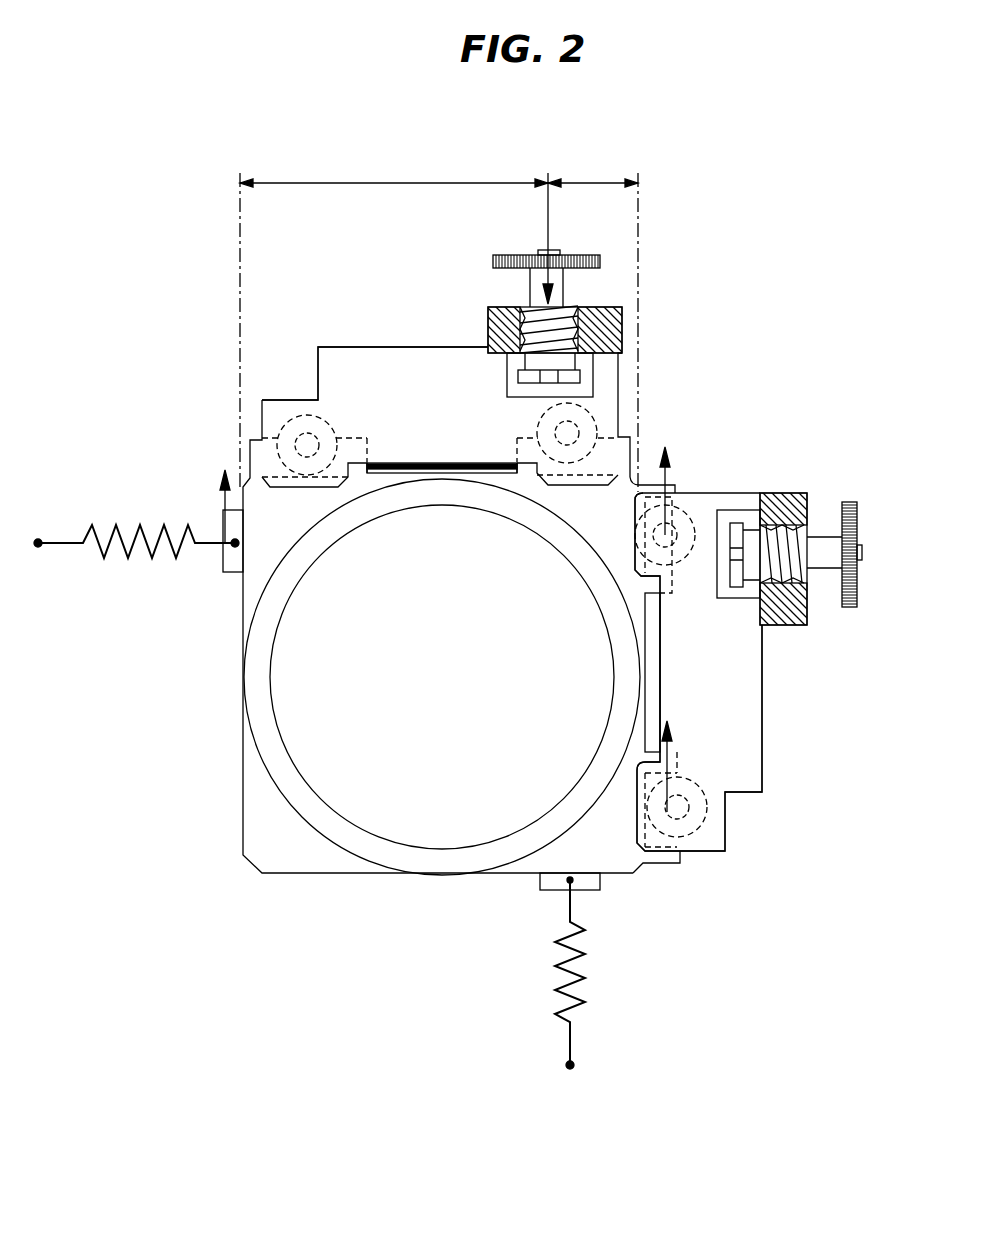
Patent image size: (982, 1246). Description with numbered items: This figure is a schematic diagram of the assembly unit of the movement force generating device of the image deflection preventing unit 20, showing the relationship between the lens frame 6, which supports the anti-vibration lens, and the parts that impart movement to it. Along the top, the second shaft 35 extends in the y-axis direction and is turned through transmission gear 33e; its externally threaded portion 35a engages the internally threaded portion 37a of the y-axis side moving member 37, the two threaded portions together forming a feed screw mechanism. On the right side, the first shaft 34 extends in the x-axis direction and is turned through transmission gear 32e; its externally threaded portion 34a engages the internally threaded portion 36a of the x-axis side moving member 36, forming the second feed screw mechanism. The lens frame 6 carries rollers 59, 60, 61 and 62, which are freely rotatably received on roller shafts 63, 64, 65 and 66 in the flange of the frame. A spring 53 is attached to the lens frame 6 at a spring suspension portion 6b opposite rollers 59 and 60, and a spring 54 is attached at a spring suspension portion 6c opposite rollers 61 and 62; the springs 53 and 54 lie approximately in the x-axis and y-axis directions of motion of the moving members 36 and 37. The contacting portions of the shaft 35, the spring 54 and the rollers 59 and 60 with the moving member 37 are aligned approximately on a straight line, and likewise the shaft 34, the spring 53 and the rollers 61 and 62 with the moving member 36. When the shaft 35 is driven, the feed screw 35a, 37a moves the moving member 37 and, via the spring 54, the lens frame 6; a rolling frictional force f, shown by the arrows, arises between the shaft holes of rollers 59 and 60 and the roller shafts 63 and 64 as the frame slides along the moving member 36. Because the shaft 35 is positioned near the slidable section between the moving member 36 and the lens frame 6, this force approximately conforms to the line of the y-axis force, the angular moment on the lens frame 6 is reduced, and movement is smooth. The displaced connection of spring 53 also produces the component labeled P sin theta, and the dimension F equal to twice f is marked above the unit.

The image deflection preventing unit 20 is at (182, 284).
The lens frame 6 is at (322, 860).
The spring suspension portion 6b is at (232, 566).
The spring suspension portion 6c is at (550, 892).
The spring 53 is at (118, 552).
The spring 54 is at (586, 992).
The transmission gear 33e is at (512, 262).
The second shaft 35 is at (565, 298).
The externally threaded portion 35a is at (535, 318).
The y-axis side moving member 37 is at (340, 365).
The internally threaded portion 37a is at (490, 332).
The roller 61 is at (590, 415).
The roller shaft 65 is at (600, 432).
The roller shaft 66 is at (300, 432).
The roller 62 is at (282, 440).
The roller 59 is at (668, 500).
The roller shaft 63 is at (700, 520).
The x-axis side moving member 36 is at (760, 742).
The internally threaded portion 36a is at (776, 495).
The externally threaded portion 34a is at (812, 520).
The first shaft 34 is at (830, 518).
The transmission gear 32e is at (858, 578).
The roller 60 is at (692, 822).
The roller shaft 64 is at (715, 806).